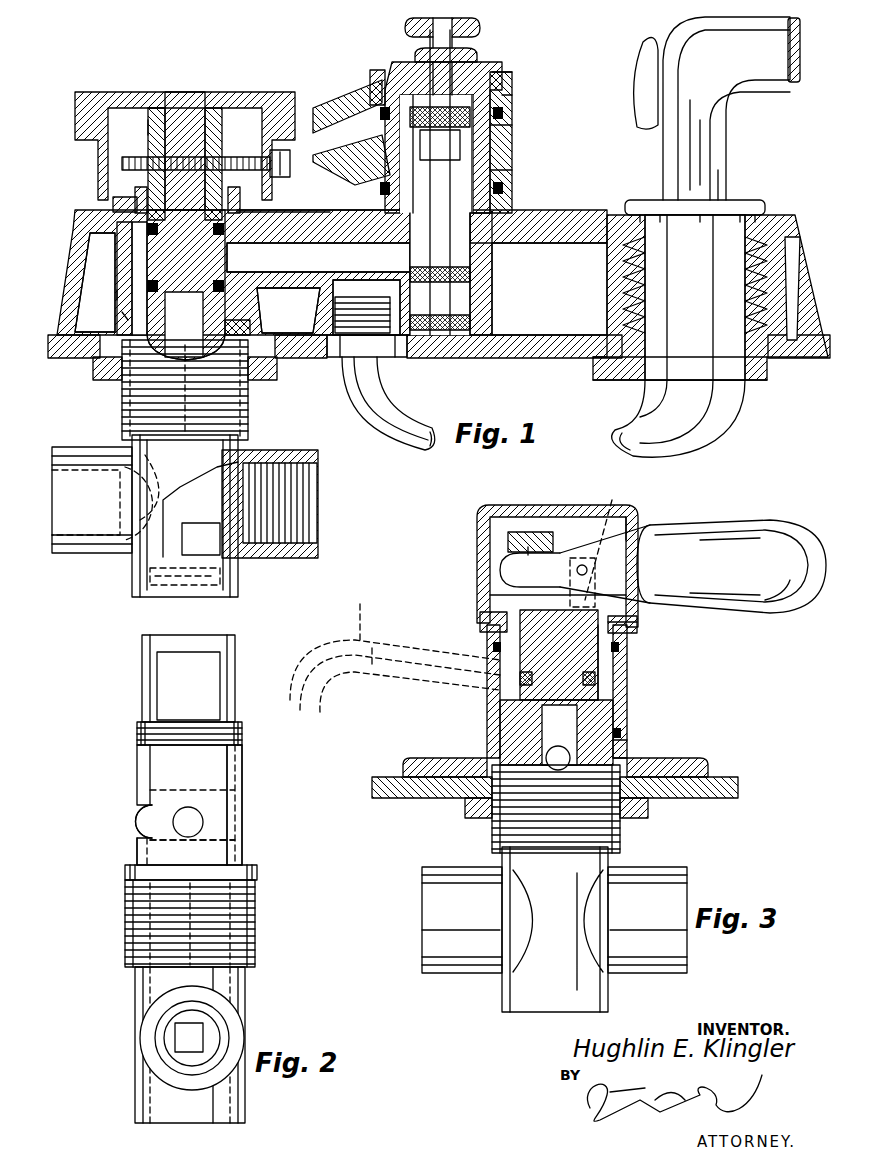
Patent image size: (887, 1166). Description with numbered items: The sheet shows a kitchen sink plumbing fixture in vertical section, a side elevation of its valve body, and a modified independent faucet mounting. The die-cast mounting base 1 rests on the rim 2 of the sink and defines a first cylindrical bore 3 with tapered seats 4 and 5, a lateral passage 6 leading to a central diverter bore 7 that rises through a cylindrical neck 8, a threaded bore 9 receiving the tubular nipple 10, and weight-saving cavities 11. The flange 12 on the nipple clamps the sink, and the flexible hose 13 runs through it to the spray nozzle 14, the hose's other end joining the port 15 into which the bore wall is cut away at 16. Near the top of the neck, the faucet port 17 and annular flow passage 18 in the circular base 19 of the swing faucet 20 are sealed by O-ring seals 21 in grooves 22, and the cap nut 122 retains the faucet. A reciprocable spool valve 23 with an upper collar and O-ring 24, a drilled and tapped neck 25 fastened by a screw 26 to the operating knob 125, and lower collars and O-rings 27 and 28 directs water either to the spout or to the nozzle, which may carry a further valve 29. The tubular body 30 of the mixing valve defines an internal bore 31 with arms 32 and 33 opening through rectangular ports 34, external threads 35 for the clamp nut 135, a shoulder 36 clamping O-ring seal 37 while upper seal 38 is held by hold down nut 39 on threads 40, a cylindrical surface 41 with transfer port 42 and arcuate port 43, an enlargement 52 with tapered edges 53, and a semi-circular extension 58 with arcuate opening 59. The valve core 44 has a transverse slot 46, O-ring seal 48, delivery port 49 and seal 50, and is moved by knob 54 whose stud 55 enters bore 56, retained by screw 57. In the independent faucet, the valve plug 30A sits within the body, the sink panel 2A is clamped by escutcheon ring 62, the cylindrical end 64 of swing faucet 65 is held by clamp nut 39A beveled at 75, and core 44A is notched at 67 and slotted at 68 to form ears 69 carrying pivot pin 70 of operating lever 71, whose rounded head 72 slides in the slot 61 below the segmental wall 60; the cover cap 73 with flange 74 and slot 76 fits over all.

In FIG. 1, the mounting base 1 is at (75, 227).
In FIG. 1, the rim of a sink 2 is at (505, 358).
In FIG. 3, the sink panel 2A is at (407, 798).
In FIG. 1, the first cylindrical bore 3 is at (117, 295).
In FIG. 1, the upper tapered seat 4 is at (280, 217).
In FIG. 1, the lower tapered seat 5 is at (127, 317).
In FIG. 1, the passage 6 is at (328, 222).
In FIG. 1, the central diverter bore 7 is at (498, 172).
In FIG. 1, the cylindrical neck 8 is at (502, 128).
In FIG. 1, the internally threaded bore 9 is at (625, 278).
In FIG. 1, the tubular nipple 10 is at (625, 323).
In FIG. 1, the cavities 11 is at (597, 214).
In FIG. 1, the flange 12 is at (593, 378).
In FIG. 1, the flexible hose 13 is at (625, 418).
In FIG. 1, the spray nozzle 14 is at (735, 125).
In FIG. 1, the port 15 is at (412, 358).
In FIG. 1, the opening 16 is at (397, 288).
In FIG. 1, the faucet port 17 is at (458, 148).
In FIG. 1, the annular flow passage 18 is at (481, 132).
In FIG. 1, the circular base 19 is at (509, 101).
In FIG. 1, the swing faucet 20 is at (337, 117).
In FIG. 1, the O-ring seals 21 is at (500, 83).
In FIG. 3, the O-ring seals 21 is at (623, 733).
In FIG. 1, the internal grooves 22 is at (508, 90).
In FIG. 3, the internal grooves 22 is at (623, 743).
In FIG. 1, the reciprocable spool valve 23 is at (448, 233).
In FIG. 1, the upper collar and O-ring 24 is at (390, 97).
In FIG. 1, the drilled and tapped neck 25 is at (397, 78).
In FIG. 1, the screw 26 is at (452, 50).
In FIG. 1, the collar and O-ring 27 is at (470, 278).
In FIG. 1, the O-ring seal 28 is at (455, 319).
In FIG. 1, the further valve 29 is at (642, 58).
In FIG. 1, the tubular body 30 is at (140, 310).
In FIG. 2, the tubular body 30 is at (138, 850).
In FIG. 3, the valve plug 30A is at (610, 656).
In FIG. 1, the internal bore 31 is at (228, 597).
In FIG. 2, the internal bore 31 is at (231, 853).
In FIG. 3, the internal bore 31 is at (555, 929).
In FIG. 1, the arm 32 is at (76, 447).
In FIG. 3, the arm 32 is at (443, 867).
In FIG. 1, the arm 33 is at (293, 450).
In FIG. 2, the arm 33 is at (233, 1023).
In FIG. 3, the arm 33 is at (657, 867).
In FIG. 1, the rectangular ports 34 is at (230, 505).
In FIG. 2, the rectangular ports 34 is at (173, 1038).
In FIG. 1, the external threads 35 is at (122, 400).
In FIG. 2, the external threads 35 is at (125, 927).
In FIG. 3, the external threads 35 is at (620, 822).
In FIG. 1, the shoulder 36 is at (248, 328).
In FIG. 2, the shoulder 36 is at (245, 867).
In FIG. 3, the shoulder 36 is at (628, 755).
In FIG. 1, the O-ring seal 37 is at (213, 332).
In FIG. 1, the upper O-ring seal 38 is at (95, 282).
In FIG. 1, the hold down nut 39 is at (112, 203).
In FIG. 3, the clamp nut 39A is at (612, 624).
In FIG. 1, the threads 40 is at (133, 188).
In FIG. 2, the threads 40 is at (138, 737).
In FIG. 1, the cylindrical exterior surface 41 is at (130, 272).
In FIG. 2, the cylindrical exterior surface 41 is at (158, 775).
In FIG. 1, the first circular transfer port 42 is at (288, 308).
In FIG. 2, the first circular transfer port 42 is at (200, 812).
In FIG. 3, the first circular transfer port 42 is at (605, 715).
In FIG. 2, the arcuate elongated port 43 is at (150, 816).
In FIG. 3, the arcuate elongated port 43 is at (515, 697).
In FIG. 1, the cylindrical valve core 44 is at (167, 557).
In FIG. 3, the valve core 44A is at (517, 715).
In FIG. 1, the transverse slot 46 is at (180, 537).
In FIG. 1, the O-ring seal 48 is at (183, 585).
In FIG. 1, the delivery port 49 is at (207, 320).
In FIG. 3, the delivery port 49 is at (558, 747).
In FIG. 1, the O-ring seal 50 is at (235, 263).
In FIG. 1, the annular enlargement 52 is at (152, 292).
In FIG. 2, the annular enlargement 52 is at (207, 840).
In FIG. 1, the tapered edges 53 is at (215, 292).
In FIG. 1, the chambered cap or knob 54 is at (102, 92).
In FIG. 1, the stud 55 is at (185, 123).
In FIG. 1, the bore 56 is at (152, 102).
In FIG. 1, the screw 57 is at (237, 157).
In FIG. 1, the semi-circular extension 58 is at (143, 108).
In FIG. 2, the semi-circular extension 58 is at (142, 663).
In FIG. 1, the arcuate opening 59 is at (143, 120).
In FIG. 2, the arcuate opening 59 is at (157, 687).
In FIG. 3, the arcuate segmental wall 60 is at (528, 547).
In FIG. 3, the rectangular opening 61 is at (510, 550).
In FIG. 3, the escutcheon ring 62 is at (403, 766).
In FIG. 3, the cylindrical end 64 is at (628, 680).
In FIG. 3, the swing faucet 65 is at (395, 656).
In FIG. 3, the transverse notch 67 is at (493, 596).
In FIG. 3, the axial slot 68 is at (605, 564).
In FIG. 3, the upstanding ears 69 is at (606, 538).
In FIG. 3, the pivot pin 70 is at (582, 564).
In FIG. 3, the operating lever 71 is at (754, 532).
In FIG. 3, the rounded head 72 is at (510, 570).
In FIG. 3, the decorative cover cap 73 is at (477, 547).
In FIG. 3, the cylindrical flange 74 is at (630, 614).
In FIG. 3, the bevel 75 is at (480, 622).
In FIG. 3, the slot 76 is at (638, 542).
In FIG. 1, the cap nut 122 is at (498, 72).
In FIG. 1, the operating knob 125 is at (478, 24).
In FIG. 1, the clamp nut 135 is at (95, 382).
In FIG. 3, the clamp nut 135 is at (470, 810).